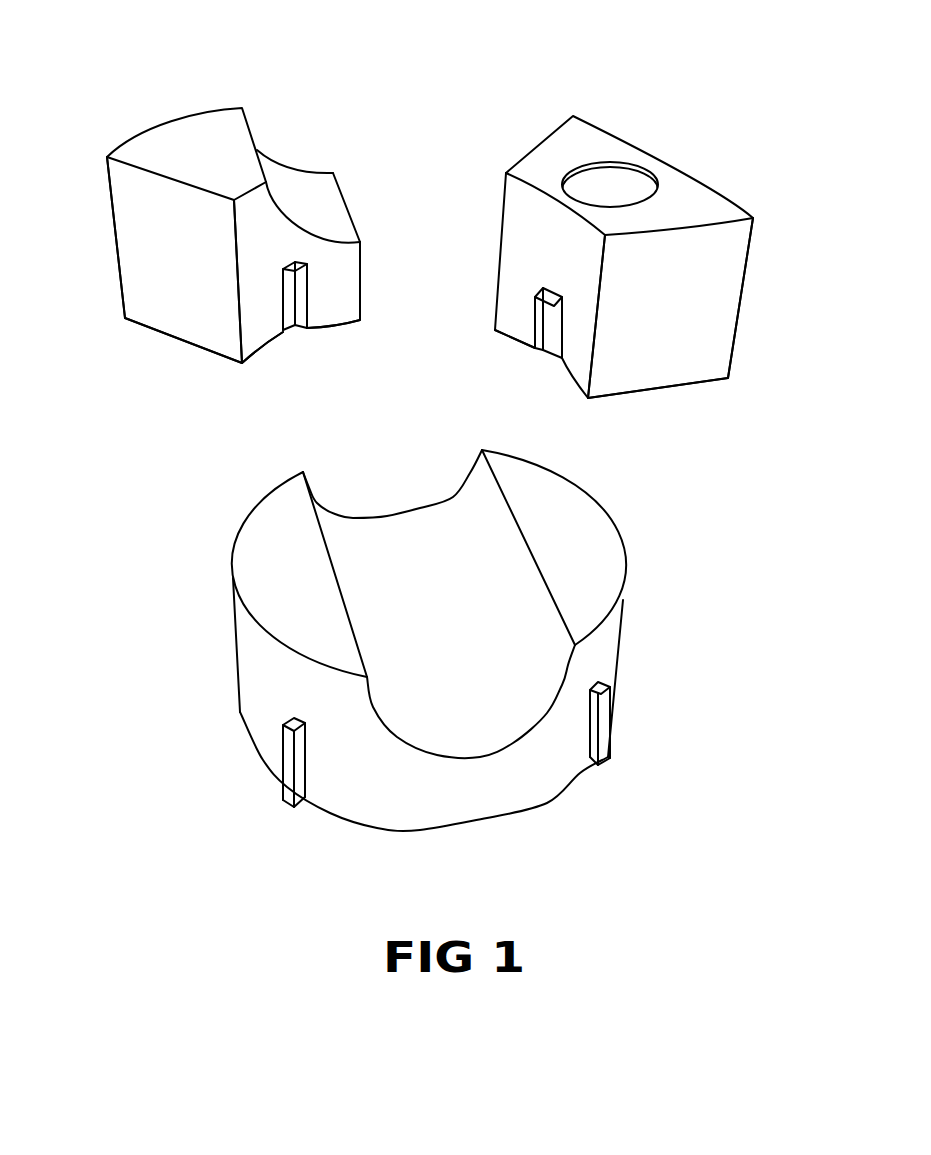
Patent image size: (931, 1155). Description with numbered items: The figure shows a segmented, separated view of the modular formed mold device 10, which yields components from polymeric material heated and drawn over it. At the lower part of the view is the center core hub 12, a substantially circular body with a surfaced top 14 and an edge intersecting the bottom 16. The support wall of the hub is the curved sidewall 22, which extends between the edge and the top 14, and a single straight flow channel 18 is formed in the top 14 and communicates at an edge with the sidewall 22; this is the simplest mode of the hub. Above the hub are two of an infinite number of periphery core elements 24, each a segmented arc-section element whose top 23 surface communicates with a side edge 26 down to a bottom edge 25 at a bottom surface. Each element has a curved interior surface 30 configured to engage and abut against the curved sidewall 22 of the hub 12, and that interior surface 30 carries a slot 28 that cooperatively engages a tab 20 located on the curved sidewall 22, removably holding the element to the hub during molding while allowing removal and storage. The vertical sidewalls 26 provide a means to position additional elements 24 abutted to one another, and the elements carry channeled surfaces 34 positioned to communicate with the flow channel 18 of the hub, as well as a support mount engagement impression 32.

The modular formed mold device 10 is at (384, 112).
The center core hub 12 is at (622, 600).
The top surface 14 is at (295, 572).
The bottom 16 is at (343, 820).
The flow channel 18 is at (503, 748).
The tab 20 is at (608, 720).
The curved sidewall 22 is at (383, 787).
The top surface of periphery element 23 is at (184, 133).
The periphery core element 24 is at (112, 152).
The bottom edge 25 is at (222, 362).
The vertical sidewall 26 is at (168, 267).
The slot 28 is at (307, 290).
The interior surface 30 is at (578, 320).
The support mount engagement impression 32 is at (608, 165).
The channeled surface 34 is at (289, 170).